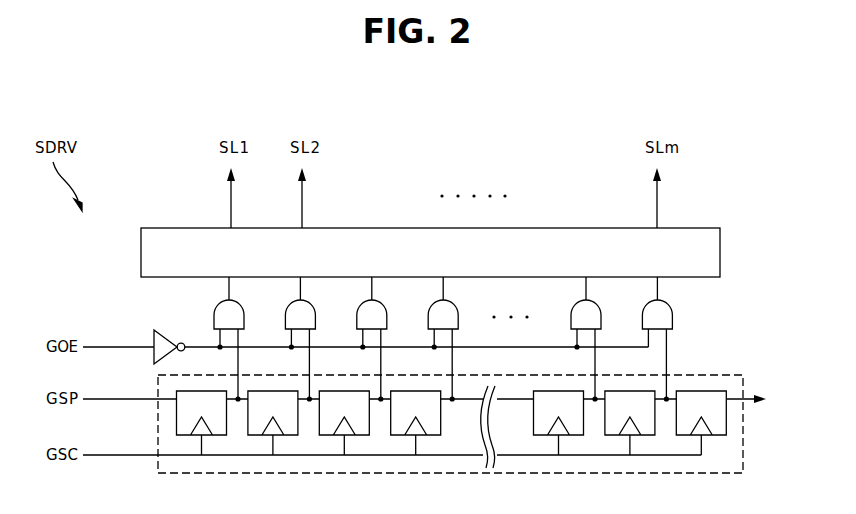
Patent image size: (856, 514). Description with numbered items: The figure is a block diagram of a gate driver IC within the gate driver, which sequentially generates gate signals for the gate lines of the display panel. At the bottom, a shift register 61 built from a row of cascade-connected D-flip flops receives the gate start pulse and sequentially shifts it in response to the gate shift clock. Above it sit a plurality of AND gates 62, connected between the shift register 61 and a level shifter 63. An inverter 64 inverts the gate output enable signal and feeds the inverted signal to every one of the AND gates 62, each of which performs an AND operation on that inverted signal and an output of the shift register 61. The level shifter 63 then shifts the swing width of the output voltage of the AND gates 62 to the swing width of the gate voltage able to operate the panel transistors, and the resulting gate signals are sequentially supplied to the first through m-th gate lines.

The shift register 61 is at (746, 423).
The AND gates 62 is at (673, 318).
The level shifter 63 is at (418, 262).
The inverter 64 is at (154, 334).